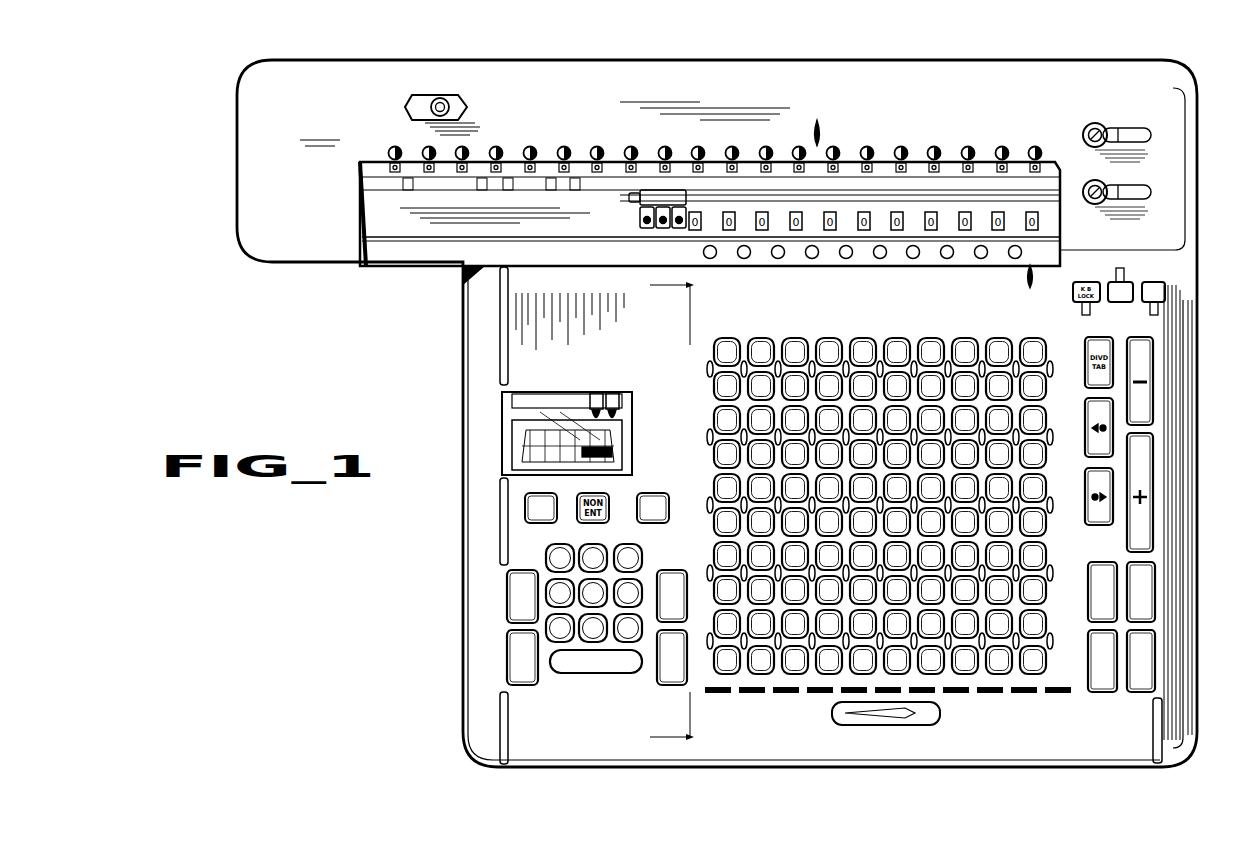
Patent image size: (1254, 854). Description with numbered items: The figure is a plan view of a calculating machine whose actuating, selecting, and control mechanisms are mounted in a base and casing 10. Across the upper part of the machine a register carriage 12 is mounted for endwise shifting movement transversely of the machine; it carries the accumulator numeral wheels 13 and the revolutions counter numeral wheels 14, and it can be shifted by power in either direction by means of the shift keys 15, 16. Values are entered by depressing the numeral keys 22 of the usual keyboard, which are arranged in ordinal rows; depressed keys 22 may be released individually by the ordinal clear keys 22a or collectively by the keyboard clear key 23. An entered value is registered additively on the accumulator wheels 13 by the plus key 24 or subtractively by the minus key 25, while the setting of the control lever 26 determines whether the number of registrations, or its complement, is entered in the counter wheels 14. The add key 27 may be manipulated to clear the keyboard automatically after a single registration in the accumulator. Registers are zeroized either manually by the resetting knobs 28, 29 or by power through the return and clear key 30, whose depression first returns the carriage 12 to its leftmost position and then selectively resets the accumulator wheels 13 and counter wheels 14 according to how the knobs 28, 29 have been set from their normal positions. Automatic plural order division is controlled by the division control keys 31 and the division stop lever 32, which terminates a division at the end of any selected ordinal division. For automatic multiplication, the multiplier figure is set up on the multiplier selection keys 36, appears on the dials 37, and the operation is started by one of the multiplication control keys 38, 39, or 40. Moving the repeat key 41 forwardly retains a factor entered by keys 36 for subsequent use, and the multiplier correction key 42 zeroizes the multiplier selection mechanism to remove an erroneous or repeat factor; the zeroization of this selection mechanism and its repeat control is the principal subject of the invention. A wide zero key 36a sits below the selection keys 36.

The base and casing 10 is at (470, 360).
The register carriage 12 is at (1017, 72).
The accumulator numeral wheels 13 is at (903, 166).
The counter numeral wheels 14 is at (901, 218).
The shift key 15 is at (1092, 415).
The shift key 16 is at (1092, 480).
The numeral keys 22 is at (937, 350).
The ordinal clear keys 22a is at (1038, 662).
The keyboard clear key 23 is at (1104, 692).
The plus key 24 is at (1140, 482).
The minus key 25 is at (1140, 399).
The control lever 26 is at (654, 494).
The add key 27 is at (1166, 297).
The resetting knob 28 is at (1103, 128).
The resetting knob 29 is at (1110, 195).
The return and clear key 30 is at (1141, 692).
The division control keys 31 is at (1108, 570).
The division stop lever 32 is at (1126, 303).
The multiplier selection keys 36 is at (596, 547).
The multiplier zero key 36a is at (580, 668).
The dials 37 is at (598, 442).
The multiplication control key 38 is at (681, 680).
The multiplication control key 39 is at (520, 682).
The multiplication control key 40 is at (522, 580).
The repeat key 41 is at (550, 525).
The multiplier correction key 42 is at (671, 582).